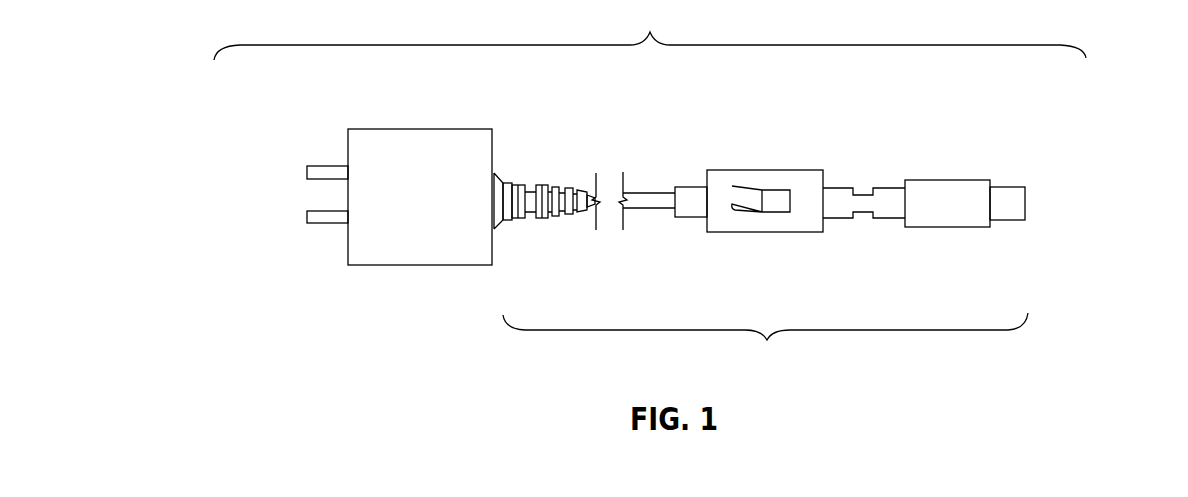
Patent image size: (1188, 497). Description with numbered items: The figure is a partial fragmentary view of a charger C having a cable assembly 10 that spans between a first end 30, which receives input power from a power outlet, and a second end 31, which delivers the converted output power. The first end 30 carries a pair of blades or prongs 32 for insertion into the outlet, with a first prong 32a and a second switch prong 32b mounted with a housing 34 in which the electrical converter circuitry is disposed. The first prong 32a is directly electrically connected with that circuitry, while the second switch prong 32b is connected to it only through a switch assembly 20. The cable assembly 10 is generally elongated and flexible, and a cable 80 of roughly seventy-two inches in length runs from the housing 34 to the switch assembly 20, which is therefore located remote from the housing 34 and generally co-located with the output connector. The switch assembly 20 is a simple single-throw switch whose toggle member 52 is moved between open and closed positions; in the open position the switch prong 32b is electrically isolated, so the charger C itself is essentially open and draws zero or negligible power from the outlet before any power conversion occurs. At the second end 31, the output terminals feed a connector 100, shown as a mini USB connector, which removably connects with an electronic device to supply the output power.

The cable assembly 10 is at (802, 247).
The switch assembly 20 is at (777, 206).
The first end 30 is at (370, 228).
The second end 31 is at (988, 253).
The prongs 32 is at (244, 191).
The first prong 32a is at (306, 172).
The second switch prong 32b is at (306, 216).
The housing 34 is at (427, 265).
The toggle member 52 is at (737, 185).
The cable 80 is at (647, 192).
The connector 100 is at (998, 187).
The charger C is at (650, 30).